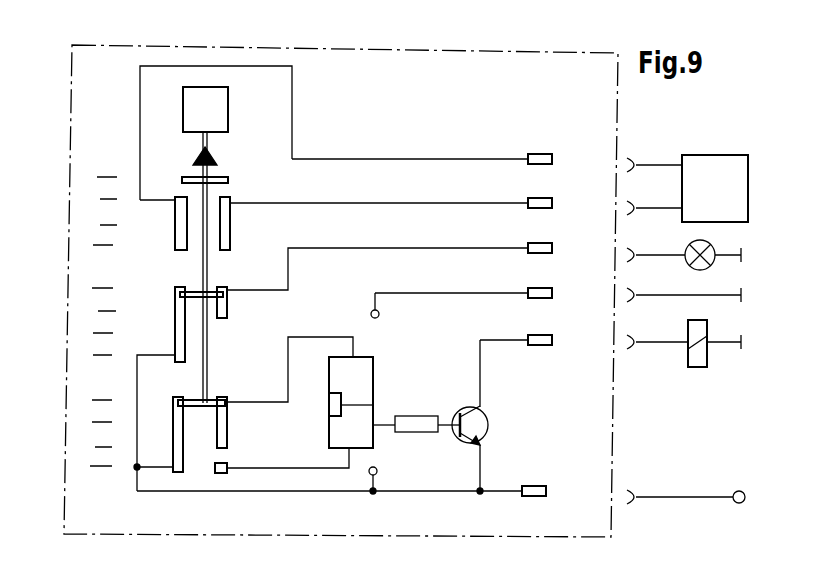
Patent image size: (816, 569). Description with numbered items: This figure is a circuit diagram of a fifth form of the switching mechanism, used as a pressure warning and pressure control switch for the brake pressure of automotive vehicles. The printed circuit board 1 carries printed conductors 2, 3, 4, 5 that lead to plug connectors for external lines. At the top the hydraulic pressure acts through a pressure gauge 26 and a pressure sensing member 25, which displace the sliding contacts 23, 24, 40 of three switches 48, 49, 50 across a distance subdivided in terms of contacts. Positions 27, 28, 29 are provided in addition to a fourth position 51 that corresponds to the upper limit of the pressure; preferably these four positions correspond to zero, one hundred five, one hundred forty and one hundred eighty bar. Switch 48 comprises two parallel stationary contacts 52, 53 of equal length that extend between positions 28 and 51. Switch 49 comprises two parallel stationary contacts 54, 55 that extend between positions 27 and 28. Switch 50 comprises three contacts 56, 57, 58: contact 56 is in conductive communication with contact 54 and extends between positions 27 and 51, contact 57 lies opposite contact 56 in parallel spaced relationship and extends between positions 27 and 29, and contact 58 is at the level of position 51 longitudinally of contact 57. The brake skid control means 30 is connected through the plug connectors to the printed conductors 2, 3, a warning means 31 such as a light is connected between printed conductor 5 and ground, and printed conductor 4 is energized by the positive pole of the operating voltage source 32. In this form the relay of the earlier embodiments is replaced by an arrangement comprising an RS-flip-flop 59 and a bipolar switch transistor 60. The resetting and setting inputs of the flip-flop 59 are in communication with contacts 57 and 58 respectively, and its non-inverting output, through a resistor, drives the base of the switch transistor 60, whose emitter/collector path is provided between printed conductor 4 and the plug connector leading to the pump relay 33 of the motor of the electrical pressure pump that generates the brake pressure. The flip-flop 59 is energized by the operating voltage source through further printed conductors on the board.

The printed circuit board 1 is at (392, 72).
The printed conductor 2 is at (401, 159).
The printed conductor 3 is at (397, 203).
The printed conductor 4 is at (445, 494).
The printed conductor 5 is at (400, 248).
The sliding contact 23 is at (188, 177).
The sliding contact 24 is at (210, 292).
The pressure sensing valve member 25 is at (208, 140).
The pressure gauge 26 is at (229, 108).
The position 27 is at (102, 176).
The position 28 is at (98, 198).
The position 29 is at (98, 224).
The brake skid control means 30 is at (612, 100).
The warning means 31 is at (684, 265).
The operating voltage source 32 is at (738, 504).
The pump relay 33 is at (693, 358).
The sliding contact 40 is at (201, 406).
The switch 48 is at (233, 186).
The switch 49 is at (215, 330).
The switch 50 is at (235, 444).
The fourth position 51 is at (113, 245).
The stationary contact 52 is at (175, 222).
The stationary contact 53 is at (230, 224).
The stationary contact 54 is at (175, 298).
The stationary contact 55 is at (227, 310).
The contact 56 is at (173, 428).
The contact 57 is at (227, 427).
The contact 58 is at (220, 474).
The RS-flip-flop 59 is at (372, 369).
The bipolar switch transistor 60 is at (484, 421).